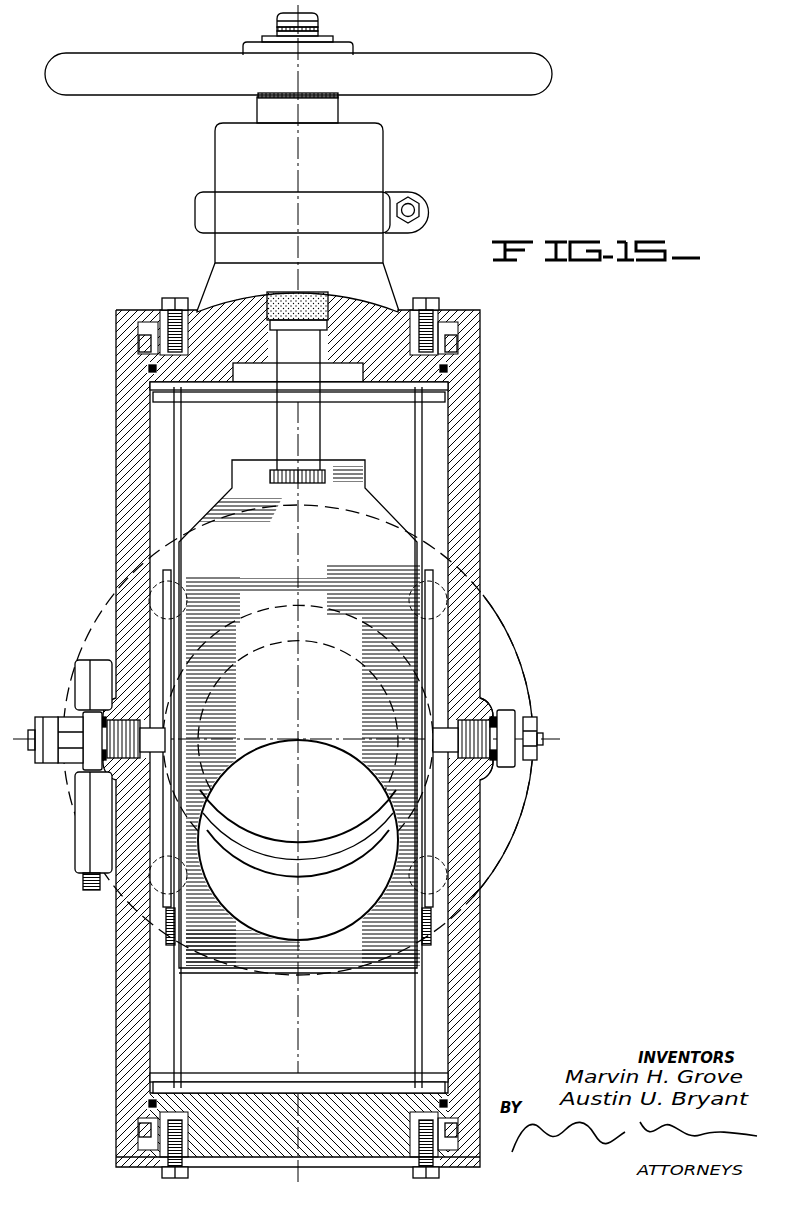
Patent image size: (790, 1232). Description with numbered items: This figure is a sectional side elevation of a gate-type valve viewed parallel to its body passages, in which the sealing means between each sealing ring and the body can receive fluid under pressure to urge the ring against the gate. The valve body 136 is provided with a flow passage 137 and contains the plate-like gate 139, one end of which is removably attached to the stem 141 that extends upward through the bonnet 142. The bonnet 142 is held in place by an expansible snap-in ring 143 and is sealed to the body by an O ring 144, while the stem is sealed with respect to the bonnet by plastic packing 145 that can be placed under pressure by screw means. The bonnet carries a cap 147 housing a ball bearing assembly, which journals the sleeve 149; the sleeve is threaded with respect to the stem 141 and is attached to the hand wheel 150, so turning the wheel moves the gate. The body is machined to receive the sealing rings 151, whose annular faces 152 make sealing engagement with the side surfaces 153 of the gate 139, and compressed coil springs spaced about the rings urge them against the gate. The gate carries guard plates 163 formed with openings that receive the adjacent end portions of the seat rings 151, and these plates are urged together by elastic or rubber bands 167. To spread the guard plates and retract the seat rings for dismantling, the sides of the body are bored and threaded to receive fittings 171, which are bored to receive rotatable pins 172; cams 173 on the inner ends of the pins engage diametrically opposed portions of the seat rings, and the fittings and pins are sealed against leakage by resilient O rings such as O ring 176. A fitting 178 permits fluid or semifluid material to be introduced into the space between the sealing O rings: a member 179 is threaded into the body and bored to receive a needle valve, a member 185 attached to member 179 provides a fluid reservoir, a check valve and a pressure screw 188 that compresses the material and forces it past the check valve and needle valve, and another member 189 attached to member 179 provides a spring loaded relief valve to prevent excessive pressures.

The valve body 136 is at (470, 503).
The flow passage 137 is at (237, 818).
The plate-like gate 139 is at (400, 640).
The stem 141 is at (310, 442).
The bonnet 142 is at (213, 278).
The expansible snap-in ring 143 is at (456, 345).
The O ring 144 is at (448, 368).
The plastic packing 145 is at (325, 298).
The cap 147 is at (367, 153).
The sleeve 149 is at (332, 112).
The hand wheel 150 is at (116, 84).
The sealing ring 151 is at (253, 837).
The annular face 152 is at (357, 838).
The side surface of the gate 153 is at (369, 938).
The guard plate 163 is at (176, 485).
The elastic band 167 is at (427, 555).
The fitting 171 is at (88, 720).
The rotatable pin 172 is at (157, 732).
The cam 173 is at (170, 642).
The resilient O ring 176 is at (487, 773).
The fitting 178 is at (66, 814).
The member 179 is at (43, 762).
The member 185 is at (80, 840).
The pressure screw 188 is at (83, 885).
The member 189 is at (77, 663).